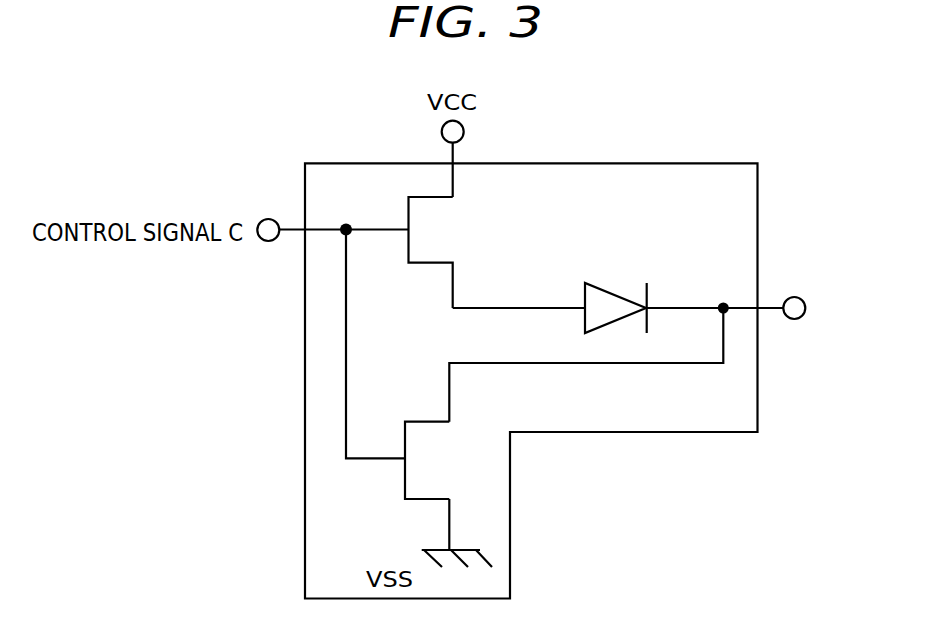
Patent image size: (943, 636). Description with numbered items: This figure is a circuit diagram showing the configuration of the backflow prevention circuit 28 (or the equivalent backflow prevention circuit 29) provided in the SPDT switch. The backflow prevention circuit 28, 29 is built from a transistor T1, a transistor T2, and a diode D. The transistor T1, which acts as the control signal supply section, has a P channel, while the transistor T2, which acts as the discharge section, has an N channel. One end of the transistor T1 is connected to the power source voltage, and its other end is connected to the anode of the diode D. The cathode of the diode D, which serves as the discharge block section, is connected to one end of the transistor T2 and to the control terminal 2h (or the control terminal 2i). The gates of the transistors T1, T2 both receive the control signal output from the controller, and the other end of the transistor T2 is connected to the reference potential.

The backflow prevention circuit 28 is at (565, 363).
The backflow prevention circuit 29 is at (715, 163).
The transistor T1 is at (455, 197).
The transistor T2 is at (423, 421).
The diode D is at (605, 289).
The control terminal 2h is at (775, 290).
The control terminal 2i is at (804, 297).